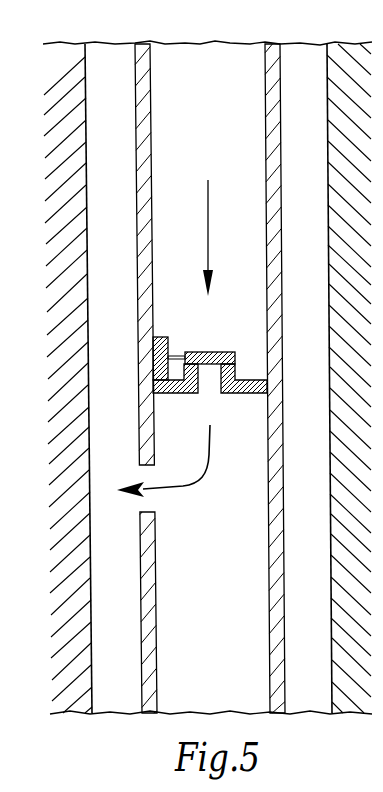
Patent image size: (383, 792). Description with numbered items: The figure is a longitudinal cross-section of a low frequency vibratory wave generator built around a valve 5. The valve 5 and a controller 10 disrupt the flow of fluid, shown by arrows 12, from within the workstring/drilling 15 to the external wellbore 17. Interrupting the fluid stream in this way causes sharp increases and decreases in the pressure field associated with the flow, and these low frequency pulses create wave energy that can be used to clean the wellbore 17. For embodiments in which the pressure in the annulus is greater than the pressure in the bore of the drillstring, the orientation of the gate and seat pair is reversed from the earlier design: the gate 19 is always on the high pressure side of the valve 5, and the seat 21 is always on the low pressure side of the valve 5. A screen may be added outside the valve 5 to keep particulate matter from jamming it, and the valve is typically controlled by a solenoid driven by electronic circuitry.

The valve 5 is at (228, 377).
The controller 10 is at (156, 345).
The arrows 12 is at (207, 232).
The workstring/drilling 15 is at (264, 122).
The external wellbore 17 is at (108, 562).
The gate 19 is at (226, 352).
The seat 21 is at (233, 394).